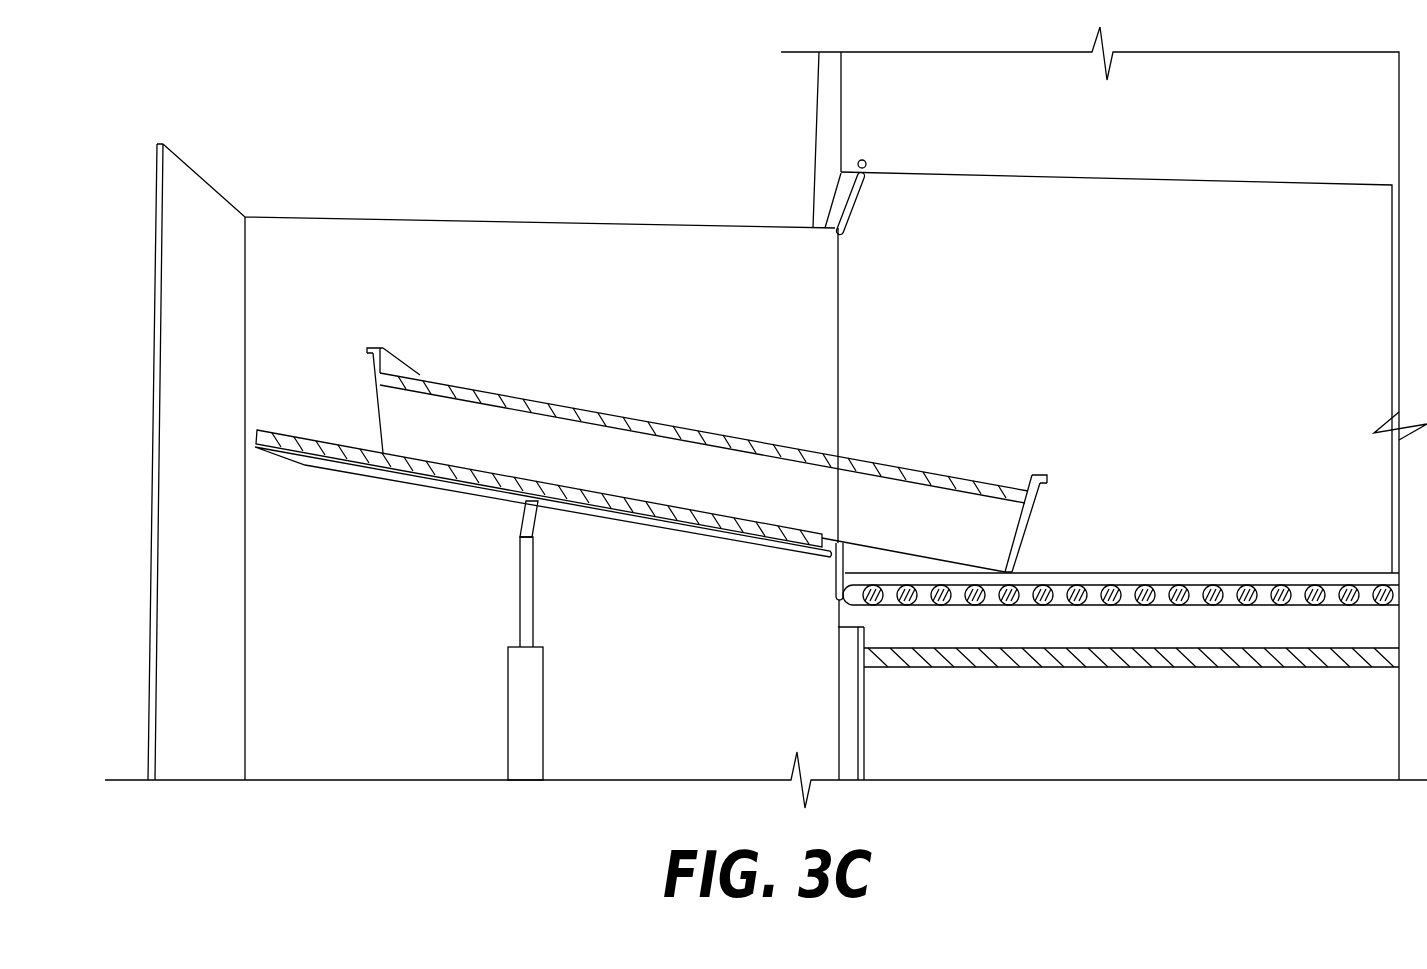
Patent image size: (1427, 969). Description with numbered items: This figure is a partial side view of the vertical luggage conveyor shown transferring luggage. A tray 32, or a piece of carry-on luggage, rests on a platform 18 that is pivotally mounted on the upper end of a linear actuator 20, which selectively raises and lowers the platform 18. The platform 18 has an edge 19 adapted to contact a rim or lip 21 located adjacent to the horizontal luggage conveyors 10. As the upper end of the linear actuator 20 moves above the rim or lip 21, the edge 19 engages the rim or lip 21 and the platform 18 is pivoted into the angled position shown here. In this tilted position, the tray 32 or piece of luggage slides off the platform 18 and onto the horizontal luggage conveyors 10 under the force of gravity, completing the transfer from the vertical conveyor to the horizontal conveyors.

The horizontal luggage conveyor 10 is at (1253, 459).
The platform 18 is at (418, 467).
The edge 19 is at (827, 550).
The linear actuator 20 is at (523, 712).
The rim or lip 21 is at (832, 597).
The tray 32 is at (670, 485).